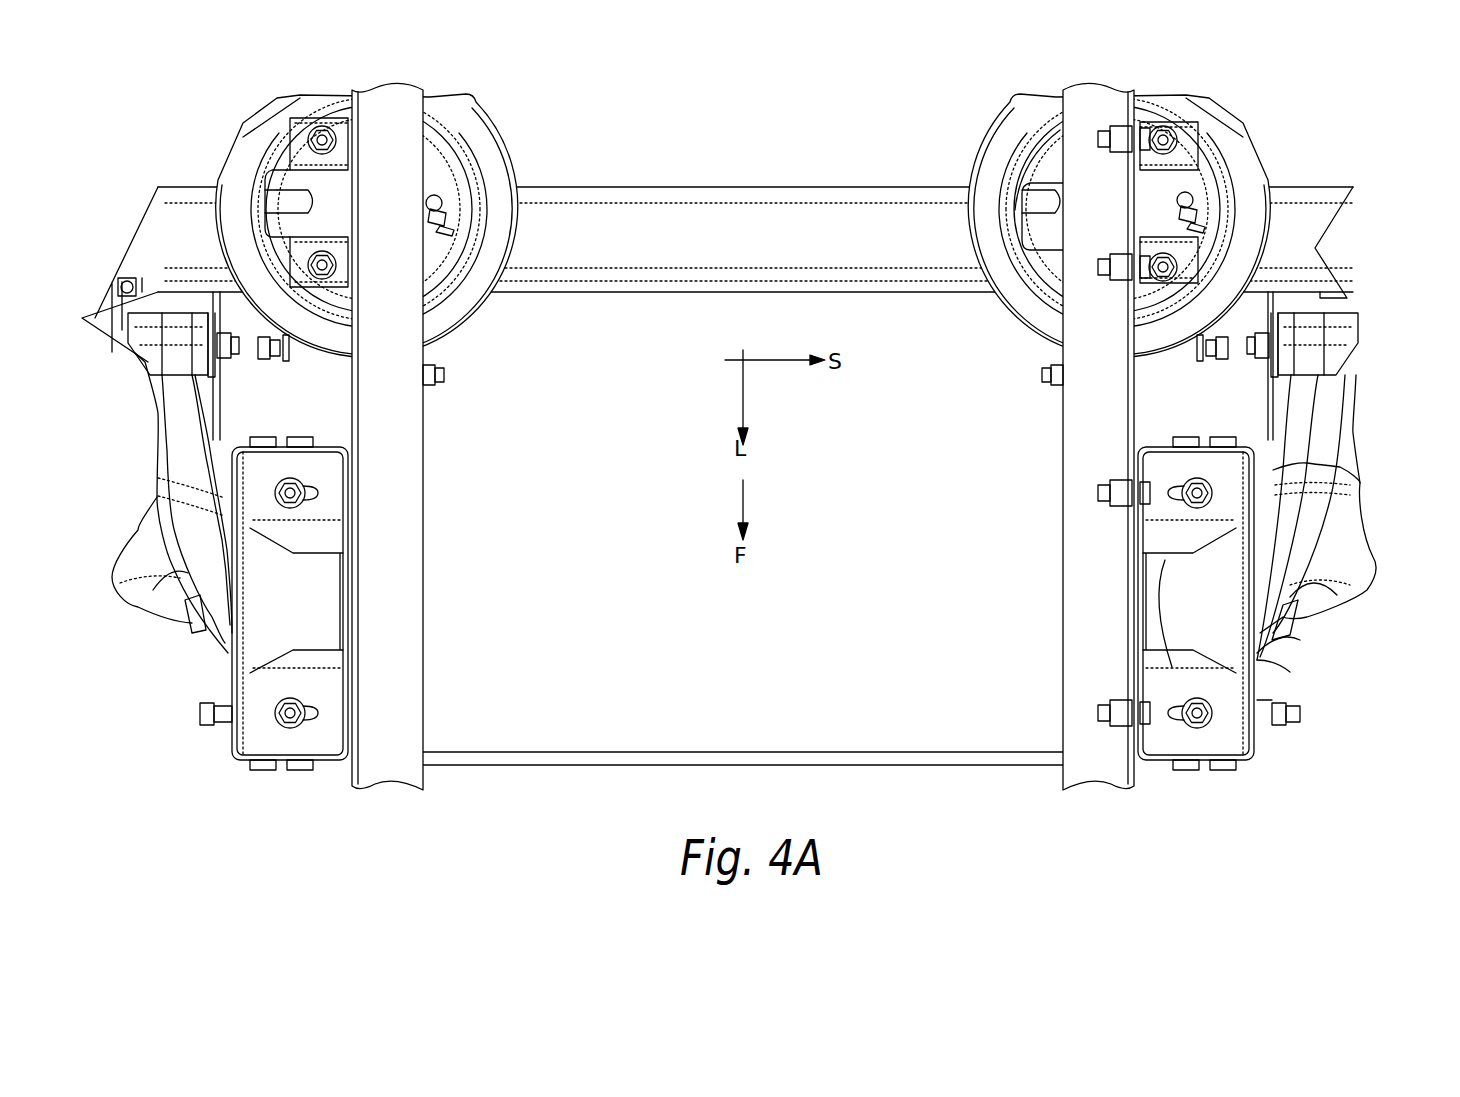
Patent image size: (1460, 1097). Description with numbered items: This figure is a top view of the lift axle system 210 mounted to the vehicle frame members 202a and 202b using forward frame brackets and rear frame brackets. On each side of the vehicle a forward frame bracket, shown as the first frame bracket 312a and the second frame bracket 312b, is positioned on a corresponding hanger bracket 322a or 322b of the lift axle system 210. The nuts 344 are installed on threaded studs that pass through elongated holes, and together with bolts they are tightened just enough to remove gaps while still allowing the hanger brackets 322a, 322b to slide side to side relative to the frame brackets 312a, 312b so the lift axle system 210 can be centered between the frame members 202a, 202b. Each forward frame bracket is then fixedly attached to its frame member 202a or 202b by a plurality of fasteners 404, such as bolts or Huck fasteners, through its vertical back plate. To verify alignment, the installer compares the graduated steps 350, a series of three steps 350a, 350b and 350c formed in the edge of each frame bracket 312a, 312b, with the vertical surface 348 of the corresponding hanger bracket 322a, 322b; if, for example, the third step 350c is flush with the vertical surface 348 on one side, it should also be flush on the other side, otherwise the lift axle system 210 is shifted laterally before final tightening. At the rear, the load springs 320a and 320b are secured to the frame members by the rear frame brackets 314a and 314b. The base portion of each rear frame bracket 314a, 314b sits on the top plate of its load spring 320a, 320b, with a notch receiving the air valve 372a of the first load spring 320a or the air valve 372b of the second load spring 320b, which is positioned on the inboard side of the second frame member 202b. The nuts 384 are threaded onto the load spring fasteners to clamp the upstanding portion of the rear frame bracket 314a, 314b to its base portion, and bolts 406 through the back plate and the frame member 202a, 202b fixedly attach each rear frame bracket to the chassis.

The lift axle system 210 is at (703, 137).
The first frame member 202a is at (1085, 115).
The second frame member 202b is at (403, 478).
The first frame bracket 312a is at (1262, 468).
The second frame bracket 312b is at (228, 476).
The rear frame bracket 314a is at (1185, 258).
The rear frame bracket 314b is at (297, 163).
The first load spring 320a is at (1263, 193).
The second load spring 320b is at (498, 127).
The hanger bracket 322a is at (1265, 565).
The hanger bracket 322b is at (232, 672).
The nut 344 is at (1212, 500).
The vertical surface 348 is at (1262, 655).
The graduated steps 350 is at (1403, 648).
The first step 350a is at (1260, 668).
The second step 350b is at (1257, 697).
The third step 350c is at (1260, 724).
The air valve 372a is at (1190, 225).
The air valve 372b is at (457, 232).
The nut 384 is at (1067, 225).
The fastener 404 is at (1165, 560).
The bolt 406 is at (1145, 180).